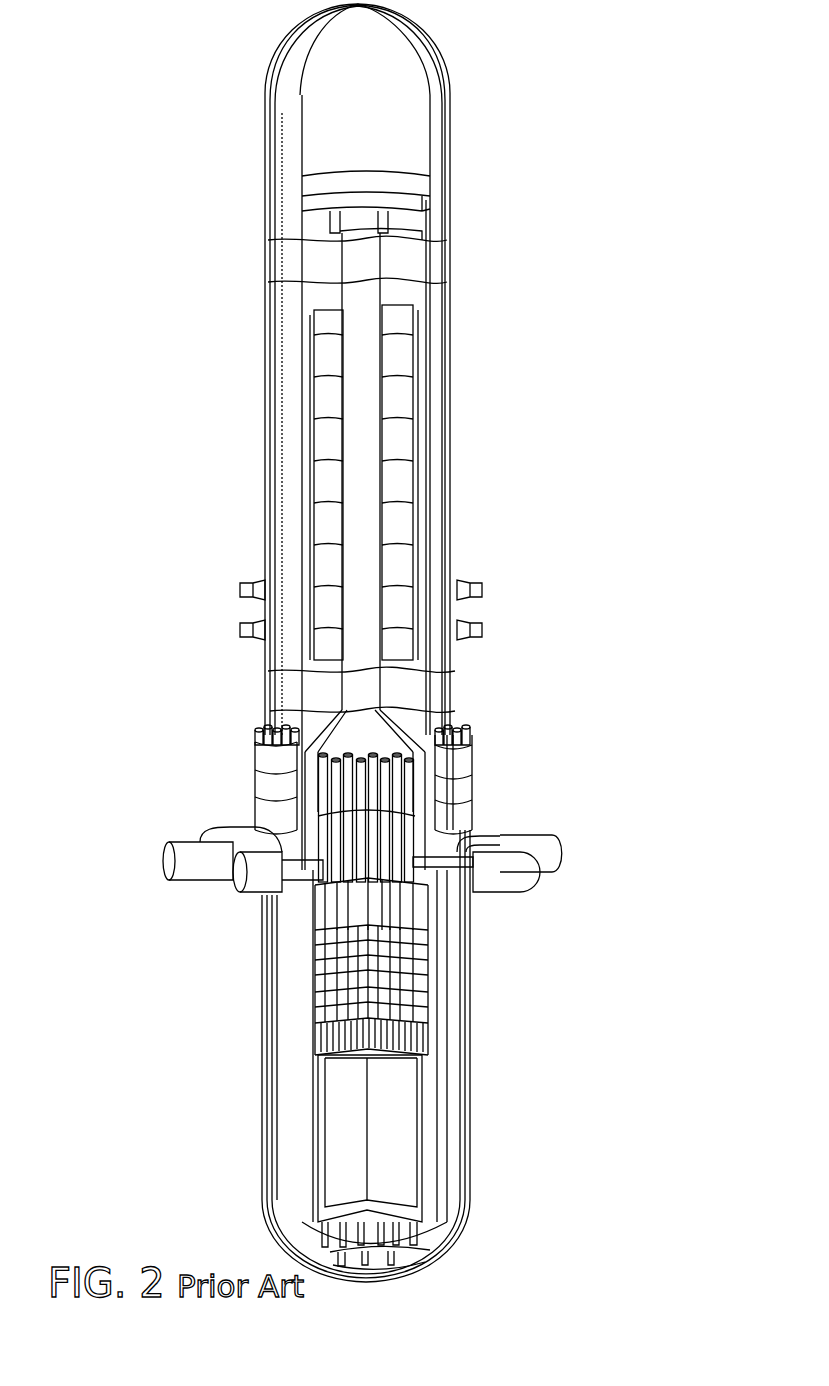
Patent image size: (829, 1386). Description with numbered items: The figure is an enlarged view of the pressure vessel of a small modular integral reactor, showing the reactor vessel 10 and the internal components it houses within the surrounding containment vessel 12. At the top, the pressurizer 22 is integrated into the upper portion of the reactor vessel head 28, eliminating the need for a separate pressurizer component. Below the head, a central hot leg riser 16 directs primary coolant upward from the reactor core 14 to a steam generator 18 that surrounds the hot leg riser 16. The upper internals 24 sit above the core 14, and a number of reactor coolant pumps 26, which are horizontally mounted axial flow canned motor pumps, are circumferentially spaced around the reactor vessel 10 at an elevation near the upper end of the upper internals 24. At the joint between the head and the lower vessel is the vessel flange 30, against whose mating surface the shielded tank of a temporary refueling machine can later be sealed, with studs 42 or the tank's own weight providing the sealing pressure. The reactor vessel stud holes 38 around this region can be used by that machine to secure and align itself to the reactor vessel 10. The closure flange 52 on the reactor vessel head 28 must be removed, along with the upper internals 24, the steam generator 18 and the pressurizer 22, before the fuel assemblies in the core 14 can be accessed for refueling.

The reactor vessel 10 is at (472, 1037).
The containment vessel 12 is at (468, 733).
The reactor core 14 is at (403, 1165).
The hot leg riser 16 is at (384, 527).
The steam generator 18 is at (392, 461).
The pressurizer 22 is at (405, 134).
The upper internals 24 is at (312, 989).
The reactor coolant pumps 26 is at (557, 852).
The reactor vessel head 28 is at (451, 329).
The vessel flange 30 is at (463, 807).
The reactor vessel stud holes 38 is at (262, 740).
The studs 42 is at (455, 748).
The closure flange 52 is at (265, 760).